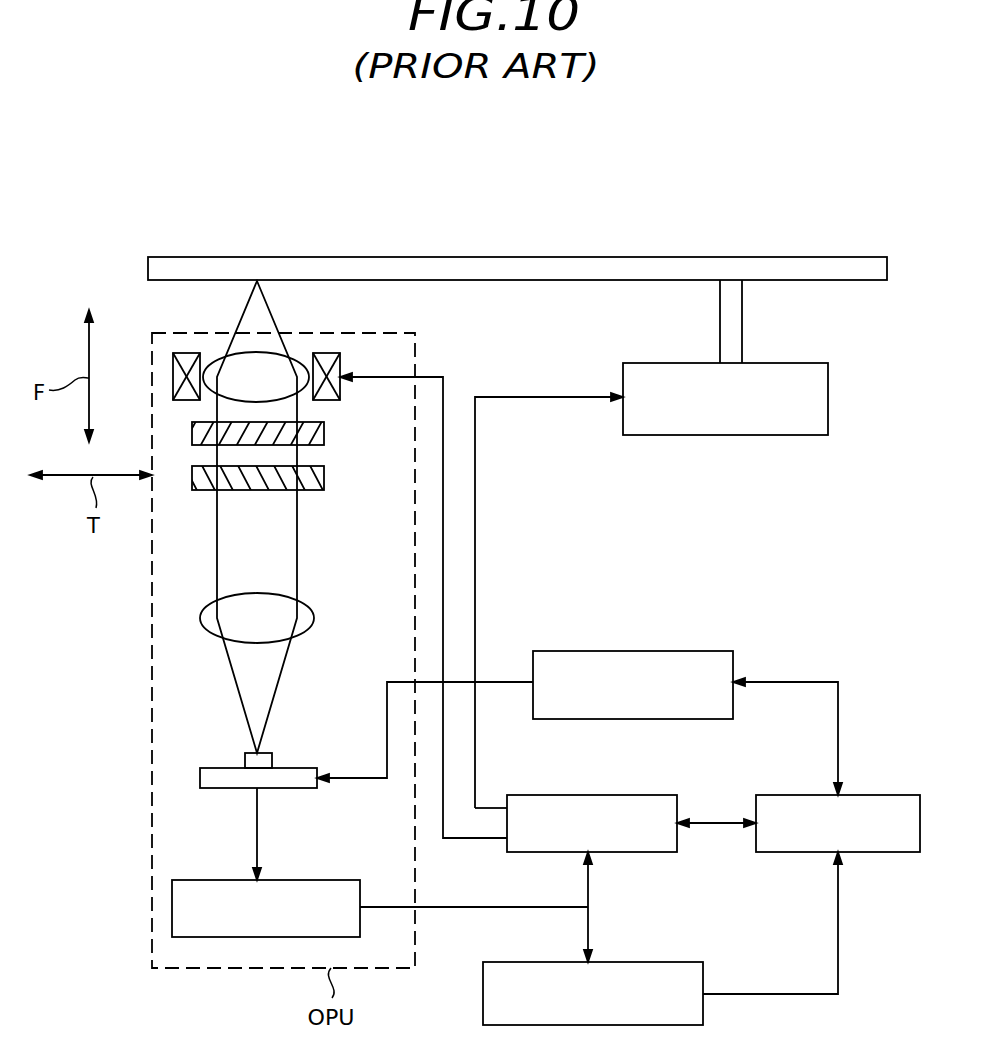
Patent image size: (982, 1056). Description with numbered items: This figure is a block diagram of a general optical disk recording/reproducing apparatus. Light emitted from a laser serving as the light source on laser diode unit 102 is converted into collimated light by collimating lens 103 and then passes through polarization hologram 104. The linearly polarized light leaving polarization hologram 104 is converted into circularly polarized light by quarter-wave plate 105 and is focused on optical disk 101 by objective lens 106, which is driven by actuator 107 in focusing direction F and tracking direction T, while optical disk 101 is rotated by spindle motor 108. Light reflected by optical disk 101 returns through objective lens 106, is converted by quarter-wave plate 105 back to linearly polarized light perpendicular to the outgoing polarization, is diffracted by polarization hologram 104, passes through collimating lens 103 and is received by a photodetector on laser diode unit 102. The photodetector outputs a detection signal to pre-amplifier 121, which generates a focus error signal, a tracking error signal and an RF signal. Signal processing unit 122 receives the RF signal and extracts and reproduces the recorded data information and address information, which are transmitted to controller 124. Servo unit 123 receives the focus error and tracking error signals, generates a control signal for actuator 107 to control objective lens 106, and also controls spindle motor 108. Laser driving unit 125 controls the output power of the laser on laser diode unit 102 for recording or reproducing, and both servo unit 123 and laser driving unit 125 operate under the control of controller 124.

The optical disk 101 is at (565, 257).
The laser diode unit 102 is at (288, 768).
The collimating lens 103 is at (312, 604).
The polarization hologram 104 is at (324, 478).
The quarter-wave plate 105 is at (324, 433).
The objective lens 106 is at (298, 360).
The actuator 107 is at (340, 398).
The spindle motor 108 is at (813, 363).
The pre-amplifier 121 is at (340, 880).
The signal processing unit 122 is at (667, 962).
The servo unit 123 is at (648, 795).
The controller 124 is at (876, 795).
The laser driving unit 125 is at (705, 651).